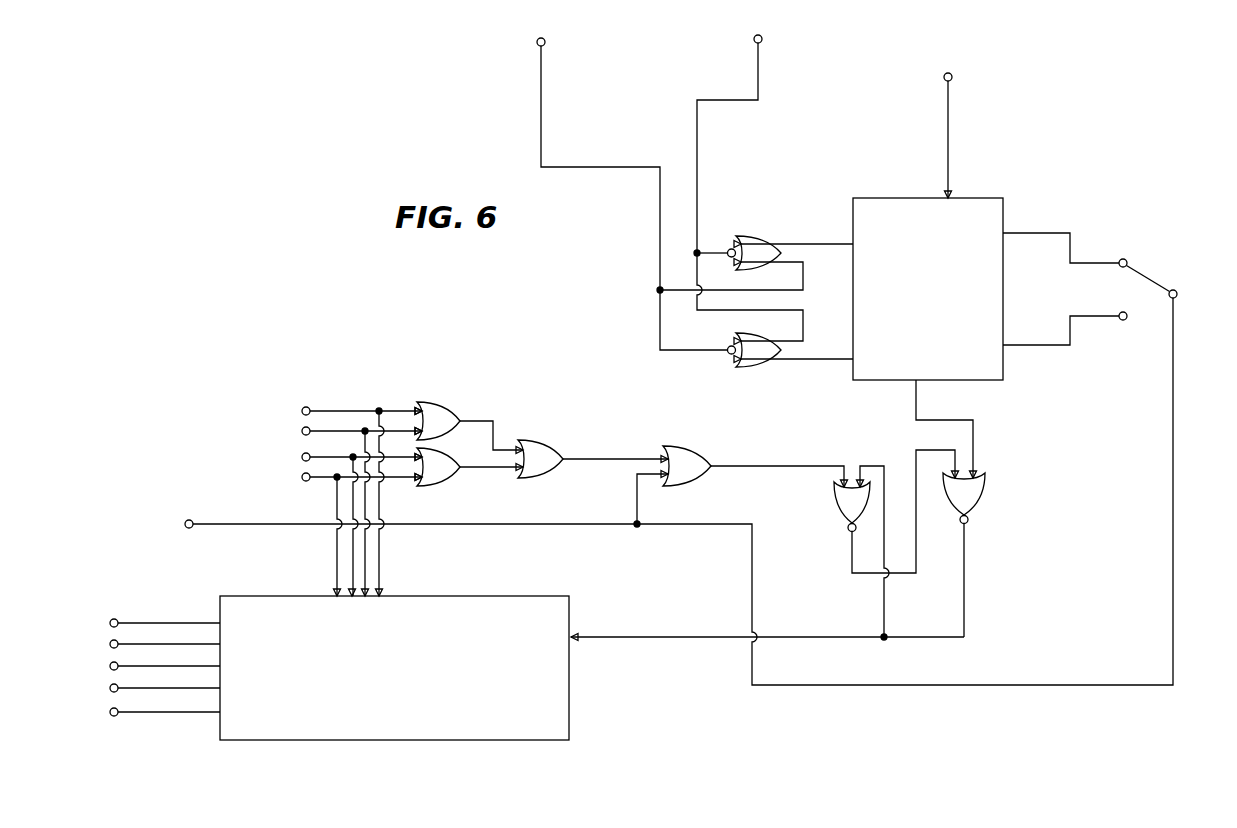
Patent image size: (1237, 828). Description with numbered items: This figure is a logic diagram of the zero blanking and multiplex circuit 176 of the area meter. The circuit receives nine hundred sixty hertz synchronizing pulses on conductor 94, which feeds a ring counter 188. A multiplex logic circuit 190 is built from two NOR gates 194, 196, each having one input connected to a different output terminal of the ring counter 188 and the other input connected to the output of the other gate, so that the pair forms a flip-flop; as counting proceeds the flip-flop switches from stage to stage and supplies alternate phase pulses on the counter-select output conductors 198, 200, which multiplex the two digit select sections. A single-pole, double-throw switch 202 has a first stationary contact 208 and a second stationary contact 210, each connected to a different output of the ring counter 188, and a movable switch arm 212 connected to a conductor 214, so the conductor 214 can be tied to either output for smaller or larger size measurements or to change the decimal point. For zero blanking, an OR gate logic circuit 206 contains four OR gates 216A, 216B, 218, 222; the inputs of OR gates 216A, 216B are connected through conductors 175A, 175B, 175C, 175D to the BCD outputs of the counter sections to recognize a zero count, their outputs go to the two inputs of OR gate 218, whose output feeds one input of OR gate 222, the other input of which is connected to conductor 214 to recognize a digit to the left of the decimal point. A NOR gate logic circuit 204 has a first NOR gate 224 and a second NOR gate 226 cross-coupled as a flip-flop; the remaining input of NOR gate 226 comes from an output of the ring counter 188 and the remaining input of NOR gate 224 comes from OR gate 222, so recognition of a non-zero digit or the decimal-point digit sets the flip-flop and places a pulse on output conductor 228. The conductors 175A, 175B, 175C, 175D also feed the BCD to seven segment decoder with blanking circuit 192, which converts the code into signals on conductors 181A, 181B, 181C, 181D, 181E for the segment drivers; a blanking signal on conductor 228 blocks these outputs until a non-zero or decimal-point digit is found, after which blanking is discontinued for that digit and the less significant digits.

The conductor 94 is at (949, 130).
The zero blanking and multiplex circuit 176 is at (1216, 429).
The conductor 175A is at (358, 410).
The conductor 175B is at (302, 431).
The conductor 175C is at (302, 457).
The conductor 175D is at (310, 482).
The conductor 181A is at (168, 622).
The conductor 181B is at (152, 644).
The conductor 181C is at (134, 666).
The conductor 181D is at (146, 688).
The conductor 181E is at (172, 713).
The ring counter 188 is at (978, 199).
The multiplex logic circuit 190 is at (731, 233).
The BCD to 7 segment decoder with blanking circuit 192 is at (510, 735).
The NOR gate 194 is at (764, 240).
The NOR gate 196 is at (765, 368).
The counter-select output conductor 198 is at (541, 118).
The counter-select output conductor 200 is at (758, 68).
The single-pole, double-throw switch 202 is at (1162, 280).
The NOR gate logic circuit 204 is at (988, 556).
The OR gate logic circuit 206 is at (502, 394).
The first stationary contact 208 is at (1127, 261).
The second stationary contact 210 is at (1125, 320).
The movable switch arm 212 is at (1177, 291).
The conductor 214 is at (1173, 590).
The OR gate 216A is at (428, 404).
The OR gate 216B is at (434, 484).
The OR gate 218 is at (548, 446).
The OR gate 222 is at (689, 481).
The first NOR gate 224 is at (844, 506).
The second NOR gate 226 is at (976, 486).
The output conductor 228 is at (662, 640).